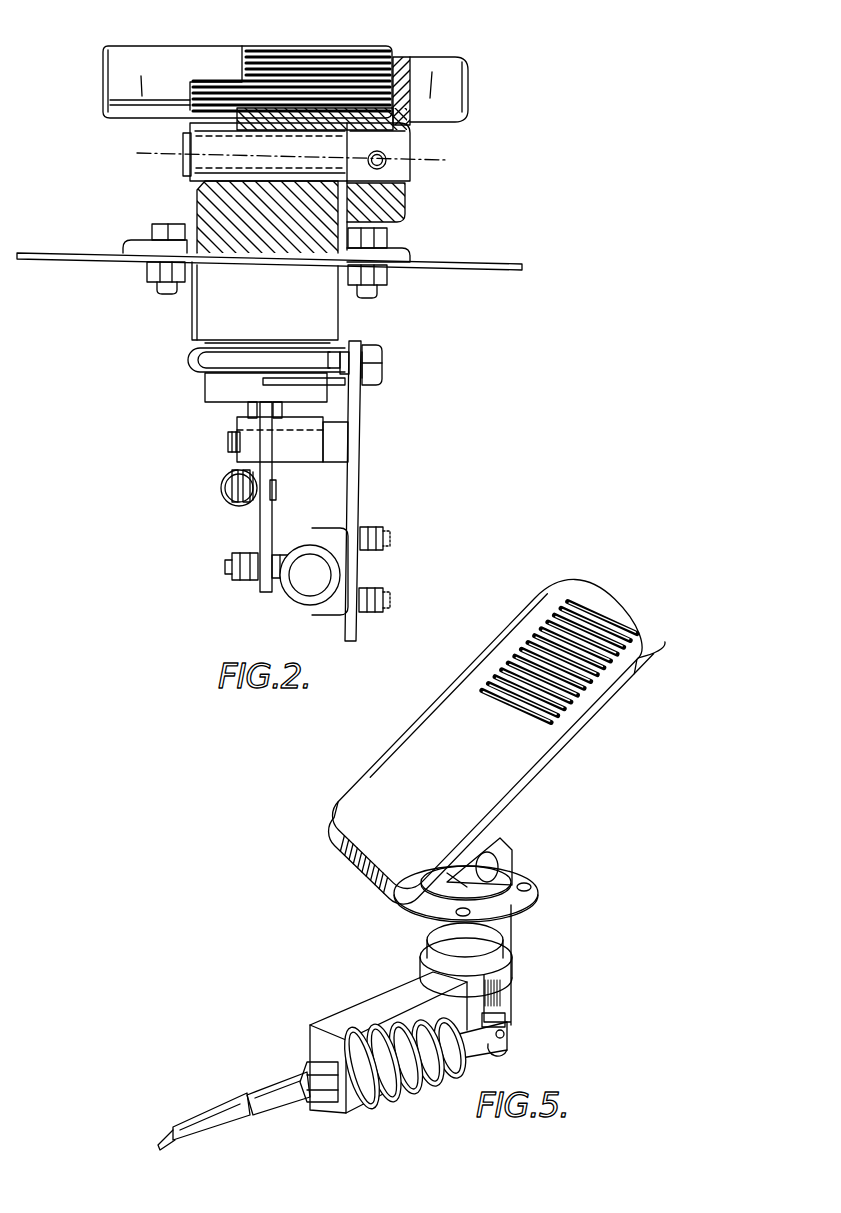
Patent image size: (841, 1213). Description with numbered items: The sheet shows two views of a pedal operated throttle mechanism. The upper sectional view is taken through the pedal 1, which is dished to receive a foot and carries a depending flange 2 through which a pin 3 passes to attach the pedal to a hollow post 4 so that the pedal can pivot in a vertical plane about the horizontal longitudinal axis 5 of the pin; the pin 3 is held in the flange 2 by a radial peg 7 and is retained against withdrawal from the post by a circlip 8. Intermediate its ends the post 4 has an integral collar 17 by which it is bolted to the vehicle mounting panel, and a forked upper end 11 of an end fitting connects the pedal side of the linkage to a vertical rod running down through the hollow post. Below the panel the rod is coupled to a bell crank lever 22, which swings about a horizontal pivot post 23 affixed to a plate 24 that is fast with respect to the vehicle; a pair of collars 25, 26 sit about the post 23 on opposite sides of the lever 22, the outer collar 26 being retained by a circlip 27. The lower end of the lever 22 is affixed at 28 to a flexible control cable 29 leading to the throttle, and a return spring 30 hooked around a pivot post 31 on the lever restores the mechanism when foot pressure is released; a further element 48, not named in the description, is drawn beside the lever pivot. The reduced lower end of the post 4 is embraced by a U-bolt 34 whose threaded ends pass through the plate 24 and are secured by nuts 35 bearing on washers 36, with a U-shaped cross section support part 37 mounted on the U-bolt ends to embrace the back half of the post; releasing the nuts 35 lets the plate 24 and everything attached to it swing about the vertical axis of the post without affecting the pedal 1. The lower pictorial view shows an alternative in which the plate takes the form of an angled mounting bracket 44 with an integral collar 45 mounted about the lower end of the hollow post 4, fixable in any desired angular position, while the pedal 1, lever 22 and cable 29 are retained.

In FIG. 2, the pedal 1 is at (133, 34).
In FIG. 5, the pedal 1 is at (367, 783).
In FIG. 2, the depending flange 2 is at (384, 208).
In FIG. 2, the pin 3 is at (393, 168).
In FIG. 2, the hollow post 4 is at (214, 199).
In FIG. 5, the hollow post 4 is at (474, 940).
In FIG. 2, the horizontal longitudinal axis 5 is at (156, 152).
In FIG. 2, the radial peg 7 is at (385, 157).
In FIG. 2, the circlip 8 is at (189, 177).
In FIG. 2, the forked upper end 11 is at (247, 407).
In FIG. 2, the integral collar 17 is at (400, 255).
In FIG. 2, the bell crank lever 22 is at (263, 528).
In FIG. 5, the bell crank lever 22 is at (501, 998).
In FIG. 2, the horizontal pivot post 23 is at (295, 442).
In FIG. 2, the plate 24 is at (353, 506).
In FIG. 2, the collar 25 is at (314, 460).
In FIG. 2, the outer collar 26 is at (226, 469).
In FIG. 2, the circlip 27 is at (230, 430).
In FIG. 2, the cable attachment 28 is at (232, 570).
In FIG. 5, the flexible control cable 29 is at (251, 1121).
In FIG. 2, the return spring 30 is at (232, 508).
In FIG. 2, the pivot post 31 is at (234, 494).
In FIG. 2, the U-bolt 34 is at (196, 363).
In FIG. 2, the nuts 35 is at (378, 363).
In FIG. 2, the washers 36 is at (360, 383).
In FIG. 2, the U-shaped cross section support part 37 is at (346, 343).
In FIG. 5, the angled mounting bracket 44 is at (366, 1008).
In FIG. 5, the integral collar 45 is at (420, 960).
In FIG. 2, the bearing 48 is at (305, 577).